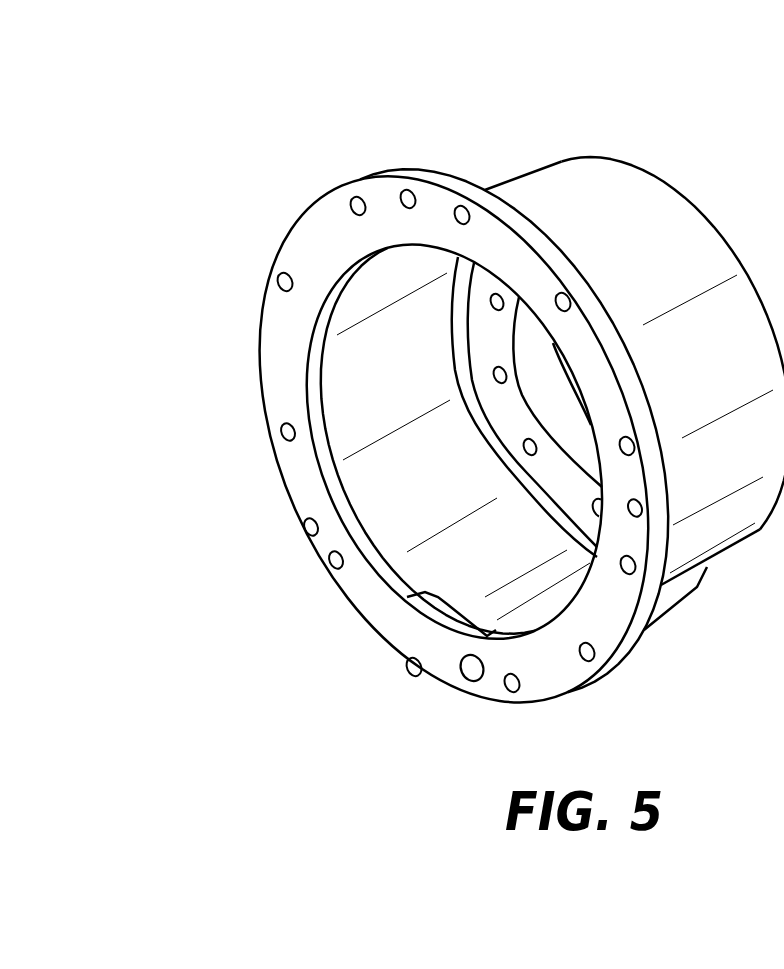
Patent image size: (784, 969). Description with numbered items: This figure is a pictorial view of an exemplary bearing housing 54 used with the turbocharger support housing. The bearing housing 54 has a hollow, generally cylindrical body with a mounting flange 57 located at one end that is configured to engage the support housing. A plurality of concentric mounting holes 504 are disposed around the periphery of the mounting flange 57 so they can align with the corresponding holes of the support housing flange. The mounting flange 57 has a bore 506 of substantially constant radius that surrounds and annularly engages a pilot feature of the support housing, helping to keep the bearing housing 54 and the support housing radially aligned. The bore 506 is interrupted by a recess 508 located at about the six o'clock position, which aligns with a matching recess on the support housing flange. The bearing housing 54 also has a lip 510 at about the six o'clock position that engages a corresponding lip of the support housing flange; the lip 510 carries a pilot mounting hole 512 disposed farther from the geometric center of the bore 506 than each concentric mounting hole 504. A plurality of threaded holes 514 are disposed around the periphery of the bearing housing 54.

The bearing housing 54 is at (271, 110).
The mounting flange 57 is at (264, 298).
The concentric mounting holes 504 is at (330, 566).
The bore 506 is at (334, 473).
The recess 508 is at (458, 630).
The lip 510 is at (458, 684).
The pilot mounting hole 512 is at (407, 667).
The threaded holes 514 is at (303, 523).